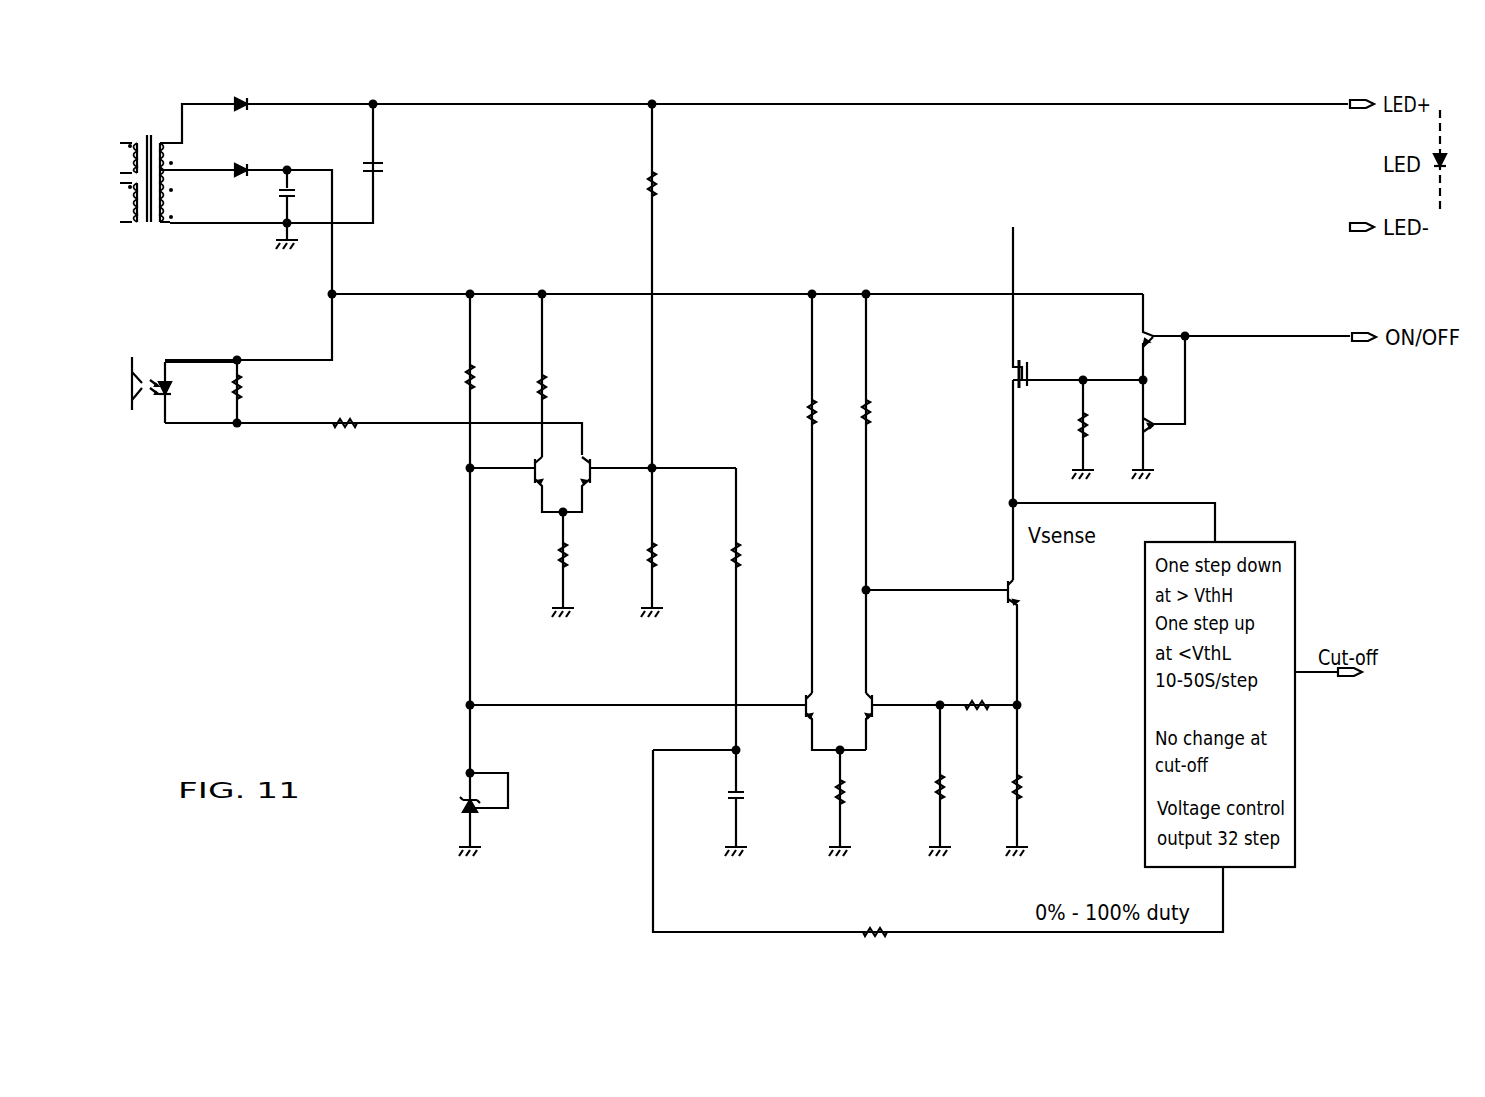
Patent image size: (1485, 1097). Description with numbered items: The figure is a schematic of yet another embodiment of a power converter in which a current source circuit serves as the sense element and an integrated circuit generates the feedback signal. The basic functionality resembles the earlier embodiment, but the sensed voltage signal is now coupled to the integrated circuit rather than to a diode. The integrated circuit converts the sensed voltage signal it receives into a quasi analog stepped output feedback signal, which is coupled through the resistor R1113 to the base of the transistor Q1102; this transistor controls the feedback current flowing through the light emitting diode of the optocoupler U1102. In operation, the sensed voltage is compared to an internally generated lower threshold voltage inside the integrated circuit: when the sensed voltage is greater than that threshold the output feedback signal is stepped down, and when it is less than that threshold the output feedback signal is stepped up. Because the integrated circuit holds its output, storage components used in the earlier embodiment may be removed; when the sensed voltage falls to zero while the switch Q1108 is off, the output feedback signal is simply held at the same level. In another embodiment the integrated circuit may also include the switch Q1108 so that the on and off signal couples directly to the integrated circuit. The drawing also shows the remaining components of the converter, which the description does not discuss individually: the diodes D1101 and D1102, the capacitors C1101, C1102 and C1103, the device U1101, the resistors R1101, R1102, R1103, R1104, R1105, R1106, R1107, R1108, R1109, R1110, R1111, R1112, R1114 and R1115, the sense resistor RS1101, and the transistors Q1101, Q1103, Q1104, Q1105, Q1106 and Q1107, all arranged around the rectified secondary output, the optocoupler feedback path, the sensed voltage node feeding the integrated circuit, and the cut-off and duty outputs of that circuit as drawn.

The rectifier diode D1101 is at (246, 89).
The rectifier diode D1102 is at (236, 155).
The output capacitor C1101 is at (410, 172).
The capacitor C1102 is at (310, 192).
The capacitor C1103 is at (700, 803).
The shunt regulator U1101 is at (512, 814).
The optocoupler U1102 is at (172, 279).
The resistor R1101 is at (436, 551).
The resistor R1102 is at (577, 375).
The resistor R1103 is at (596, 564).
The resistor R1104 is at (688, 286).
The resistor R1105 is at (682, 542).
The resistor R1106 is at (373, 425).
The resistor R1107 is at (274, 391).
The resistor R1108 is at (777, 493).
The resistor R1109 is at (874, 803).
The resistor R1110 is at (901, 493).
The resistor R1111 is at (978, 692).
The resistor R1112 is at (972, 780).
The resistor R1113 is at (770, 630).
The resistor R1114 is at (938, 843).
The resistor R1115 is at (1056, 429).
The sense resistor RS1101 is at (1054, 780).
The transistor Q1101 is at (516, 484).
The transistor Q1102 is at (649, 484).
The transistor Q1103 is at (668, 721).
The transistor Q1104 is at (903, 721).
The transistor Q1105 is at (942, 642).
The transistor Q1106 is at (1246, 337).
The transistor Q1107 is at (1178, 407).
The switch Q1108 is at (1067, 368).